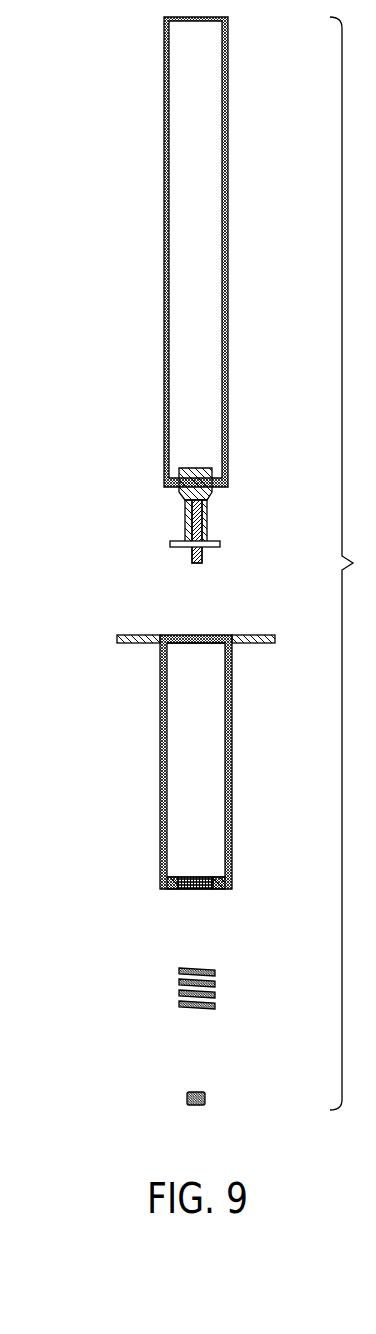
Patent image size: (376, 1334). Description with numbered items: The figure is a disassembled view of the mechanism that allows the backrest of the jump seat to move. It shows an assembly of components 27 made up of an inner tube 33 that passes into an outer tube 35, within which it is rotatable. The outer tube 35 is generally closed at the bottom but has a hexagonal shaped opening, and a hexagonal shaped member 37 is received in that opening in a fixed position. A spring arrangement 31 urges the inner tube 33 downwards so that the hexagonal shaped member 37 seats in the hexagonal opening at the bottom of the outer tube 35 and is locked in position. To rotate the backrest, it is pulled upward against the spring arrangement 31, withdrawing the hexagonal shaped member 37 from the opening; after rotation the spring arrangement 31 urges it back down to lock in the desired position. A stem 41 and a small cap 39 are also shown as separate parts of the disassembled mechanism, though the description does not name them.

The assembly of components 27 is at (96, 441).
The inner tube 33 is at (228, 213).
The hexagonal shaped member 37 is at (178, 493).
The stem 41 is at (202, 555).
The outer tube 35 is at (232, 762).
The spring arrangement 31 is at (215, 985).
The cap 39 is at (205, 1096).